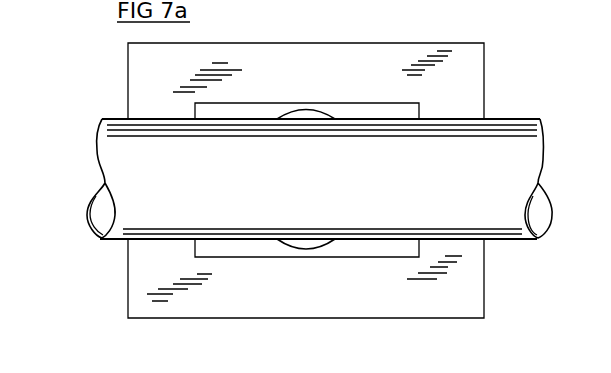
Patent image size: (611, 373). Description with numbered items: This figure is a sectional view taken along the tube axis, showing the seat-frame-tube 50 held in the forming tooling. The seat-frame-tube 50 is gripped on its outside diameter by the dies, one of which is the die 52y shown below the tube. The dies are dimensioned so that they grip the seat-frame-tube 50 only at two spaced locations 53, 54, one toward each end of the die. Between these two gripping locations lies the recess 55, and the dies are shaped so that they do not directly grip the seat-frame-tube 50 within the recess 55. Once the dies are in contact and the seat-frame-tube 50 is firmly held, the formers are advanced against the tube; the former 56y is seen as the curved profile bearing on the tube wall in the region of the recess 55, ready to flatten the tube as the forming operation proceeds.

The seat-frame-tube 50 is at (513, 162).
The die 52y is at (136, 283).
The gripping location 53 is at (160, 113).
The gripping location 54 is at (453, 113).
The recess 55 is at (380, 108).
The former 56y is at (310, 110).